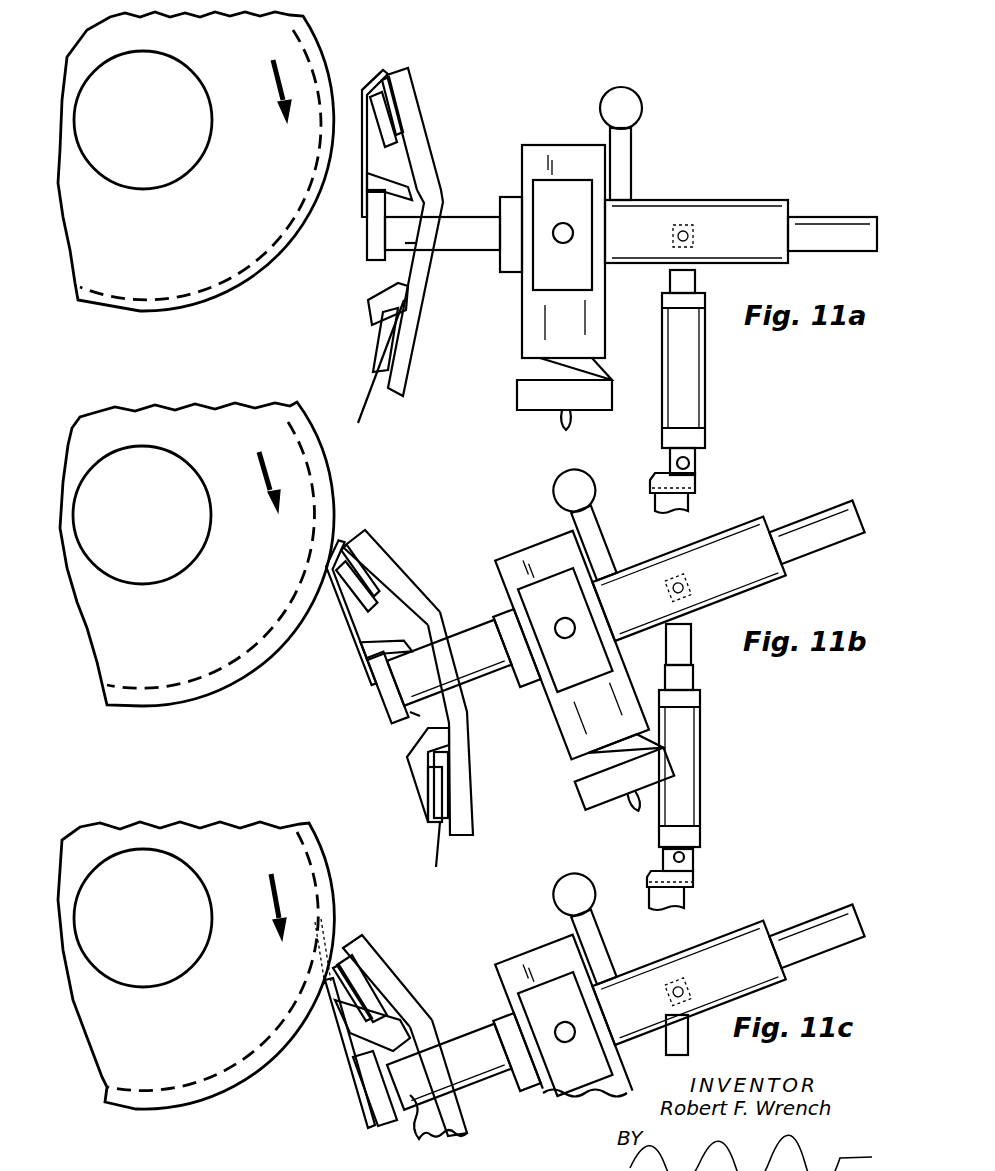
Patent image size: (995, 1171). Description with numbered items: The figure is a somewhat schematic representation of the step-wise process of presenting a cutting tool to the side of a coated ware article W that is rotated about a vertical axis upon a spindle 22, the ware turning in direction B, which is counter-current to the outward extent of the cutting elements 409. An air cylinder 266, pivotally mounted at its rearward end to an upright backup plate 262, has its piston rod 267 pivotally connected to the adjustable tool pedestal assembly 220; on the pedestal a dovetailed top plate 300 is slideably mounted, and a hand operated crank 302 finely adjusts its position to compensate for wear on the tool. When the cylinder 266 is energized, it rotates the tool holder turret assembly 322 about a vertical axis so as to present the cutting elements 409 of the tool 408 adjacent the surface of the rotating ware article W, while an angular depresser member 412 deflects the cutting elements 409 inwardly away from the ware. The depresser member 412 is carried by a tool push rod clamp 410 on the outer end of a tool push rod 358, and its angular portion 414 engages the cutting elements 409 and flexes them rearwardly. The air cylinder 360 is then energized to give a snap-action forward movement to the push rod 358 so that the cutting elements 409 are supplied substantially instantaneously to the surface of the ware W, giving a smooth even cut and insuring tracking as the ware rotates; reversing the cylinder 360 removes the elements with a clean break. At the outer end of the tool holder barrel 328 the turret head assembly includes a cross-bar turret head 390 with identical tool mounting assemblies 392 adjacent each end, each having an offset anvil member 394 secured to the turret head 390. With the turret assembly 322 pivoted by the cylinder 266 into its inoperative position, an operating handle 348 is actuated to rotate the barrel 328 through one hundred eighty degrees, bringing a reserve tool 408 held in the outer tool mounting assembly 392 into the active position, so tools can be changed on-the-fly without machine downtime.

In FIG. 11A, the spindle 22 is at (170, 311).
In FIG. 11B, the spindle 22 is at (183, 707).
In FIG. 11C, the spindle 22 is at (197, 1098).
In FIG. 11A, the ware article W is at (128, 293).
In FIG. 11B, the ware article W is at (155, 690).
In FIG. 11C, the ware article W is at (142, 1090).
In FIG. 11A, the direction of movement B is at (278, 92).
In FIG. 11B, the direction of movement B is at (270, 480).
In FIG. 11C, the direction of movement B is at (277, 905).
In FIG. 11A, the adjustable tool pedestal assembly 220 is at (516, 283).
In FIG. 11B, the adjustable tool pedestal assembly 220 is at (541, 702).
In FIG. 11C, the adjustable tool pedestal assembly 220 is at (539, 1101).
In FIG. 11A, the backup plate 262 is at (693, 504).
In FIG. 11B, the backup plate 262 is at (693, 903).
In FIG. 11A, the air cylinder 266 is at (662, 400).
In FIG. 11B, the air cylinder 266 is at (701, 781).
In FIG. 11B, the piston rod 267 is at (691, 653).
In FIG. 11A, the dovetailed top plate 300 is at (606, 336).
In FIG. 11B, the dovetailed top plate 300 is at (553, 542).
In FIG. 11C, the dovetailed top plate 300 is at (553, 946).
In FIG. 11A, the hand operated crank 302 is at (517, 393).
In FIG. 11B, the hand operated crank 302 is at (582, 792).
In FIG. 11A, the tool holder turret assembly 322 is at (760, 196).
In FIG. 11B, the tool holder turret assembly 322 is at (815, 507).
In FIG. 11C, the tool holder turret assembly 322 is at (802, 902).
In FIG. 11A, the tool holder barrel 328 is at (450, 250).
In FIG. 11B, the tool holder barrel 328 is at (468, 688).
In FIG. 11C, the tool holder barrel 328 is at (467, 1090).
In FIG. 11A, the operating handle 348 is at (631, 179).
In FIG. 11B, the operating handle 348 is at (614, 543).
In FIG. 11C, the operating handle 348 is at (607, 957).
In FIG. 11A, the tool push rod 358 is at (408, 243).
In FIG. 11B, the tool push rod 358 is at (417, 715).
In FIG. 11C, the tool push rod 358 is at (408, 1138).
In FIG. 11A, the air cylinder 360 is at (863, 199).
In FIG. 11B, the air cylinder 360 is at (839, 512).
In FIG. 11C, the air cylinder 360 is at (830, 913).
In FIG. 11A, the cross-bar turret head 390 is at (432, 168).
In FIG. 11B, the cross-bar turret head 390 is at (405, 588).
In FIG. 11C, the cross-bar turret head 390 is at (387, 981).
In FIG. 11A, the tool mounting assembly 392 is at (418, 363).
In FIG. 11B, the tool mounting assembly 392 is at (473, 828).
In FIG. 11C, the tool mounting assembly 392 is at (388, 965).
In FIG. 11A, the offset anvil member 394 is at (420, 196).
In FIG. 11B, the offset anvil member 394 is at (368, 632).
In FIG. 11C, the offset anvil member 394 is at (372, 1025).
In FIG. 11A, the tool 408 is at (392, 133).
In FIG. 11B, the tool 408 is at (360, 582).
In FIG. 11C, the tool 408 is at (352, 975).
In FIG. 11A, the cutting elements 409 is at (410, 65).
In FIG. 11B, the cutting elements 409 is at (347, 542).
In FIG. 11C, the cutting elements 409 is at (322, 930).
In FIG. 11A, the tool push rod clamp 410 is at (367, 253).
In FIG. 11B, the tool push rod clamp 410 is at (383, 714).
In FIG. 11C, the tool push rod clamp 410 is at (378, 1122).
In FIG. 11A, the angular depresser member 412 is at (362, 174).
In FIG. 11B, the angular depresser member 412 is at (336, 556).
In FIG. 11C, the angular depresser member 412 is at (320, 953).
In FIG. 11A, the angular portion 414 is at (368, 88).